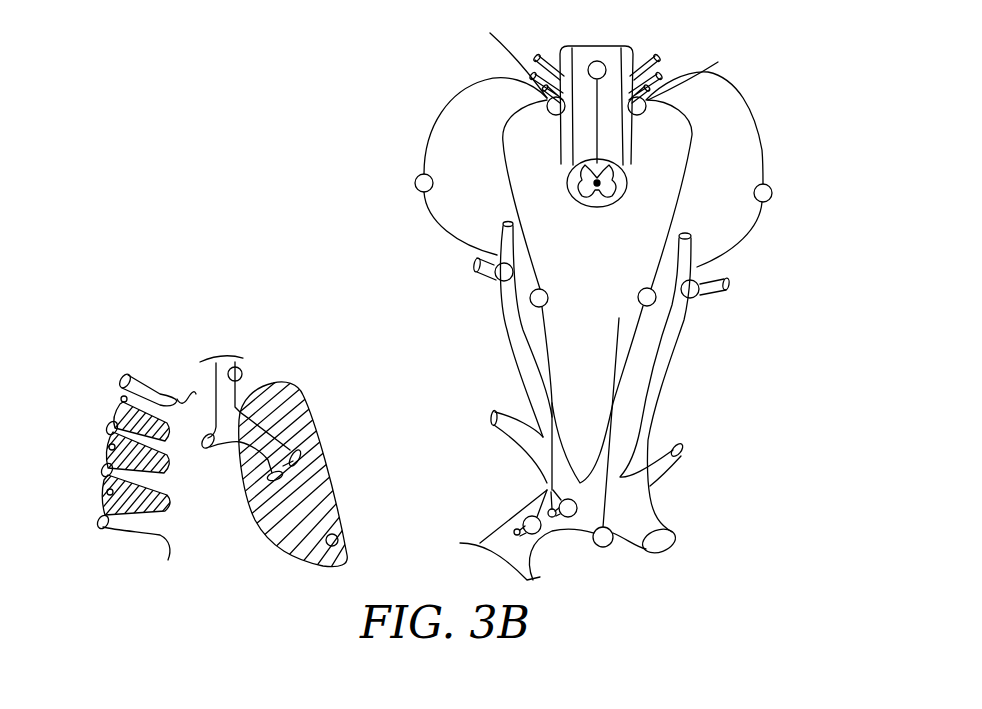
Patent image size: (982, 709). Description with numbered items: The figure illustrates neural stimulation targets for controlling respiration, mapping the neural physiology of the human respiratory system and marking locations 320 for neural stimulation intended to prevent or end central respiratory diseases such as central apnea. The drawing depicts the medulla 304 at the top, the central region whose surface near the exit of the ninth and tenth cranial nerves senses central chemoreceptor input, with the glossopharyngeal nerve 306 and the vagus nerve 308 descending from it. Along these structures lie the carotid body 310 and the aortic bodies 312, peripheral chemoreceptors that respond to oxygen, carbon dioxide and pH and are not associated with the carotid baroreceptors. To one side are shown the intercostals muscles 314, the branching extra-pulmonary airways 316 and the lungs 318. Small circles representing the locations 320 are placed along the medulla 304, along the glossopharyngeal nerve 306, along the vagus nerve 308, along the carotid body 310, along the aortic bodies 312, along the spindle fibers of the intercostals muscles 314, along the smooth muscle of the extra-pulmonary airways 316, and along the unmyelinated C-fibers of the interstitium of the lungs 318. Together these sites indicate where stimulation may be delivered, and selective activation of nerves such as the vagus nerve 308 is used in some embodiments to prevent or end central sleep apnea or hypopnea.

The medulla 304 is at (612, 50).
The glossopharyngeal nerve 306 is at (762, 141).
The vagus nerve 308 is at (676, 193).
The carotid body 310 is at (700, 268).
The aortic bodies 312 is at (545, 490).
The intercostals muscles 314 is at (118, 425).
The extra-pulmonary airways 316 is at (214, 372).
The lungs 318 is at (334, 500).
The locations for neural stimulation 320 is at (594, 60).